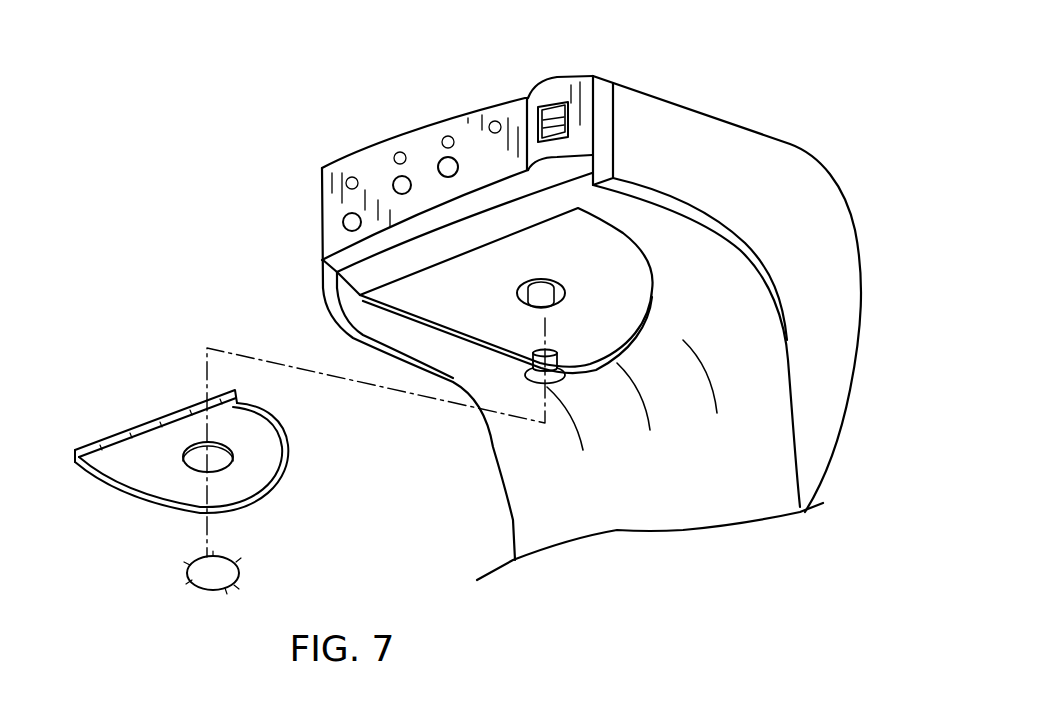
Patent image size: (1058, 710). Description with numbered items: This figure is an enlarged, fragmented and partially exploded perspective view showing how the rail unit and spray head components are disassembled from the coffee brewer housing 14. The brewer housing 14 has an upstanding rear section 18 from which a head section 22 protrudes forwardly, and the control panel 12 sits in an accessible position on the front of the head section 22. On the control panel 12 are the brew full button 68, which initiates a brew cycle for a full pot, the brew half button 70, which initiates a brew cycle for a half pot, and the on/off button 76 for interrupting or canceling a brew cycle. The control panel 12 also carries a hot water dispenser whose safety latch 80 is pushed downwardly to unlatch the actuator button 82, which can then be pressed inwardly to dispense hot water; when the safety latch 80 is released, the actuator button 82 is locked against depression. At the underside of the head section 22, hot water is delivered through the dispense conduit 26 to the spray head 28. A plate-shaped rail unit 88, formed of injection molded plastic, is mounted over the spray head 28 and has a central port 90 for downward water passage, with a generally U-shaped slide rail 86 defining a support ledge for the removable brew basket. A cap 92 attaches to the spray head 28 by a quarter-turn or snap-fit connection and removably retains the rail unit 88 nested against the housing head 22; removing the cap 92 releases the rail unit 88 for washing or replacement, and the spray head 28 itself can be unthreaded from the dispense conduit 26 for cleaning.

The control panel 12 is at (372, 145).
The brewer housing 14 is at (843, 226).
The rear section 18 is at (770, 483).
The head section 22 is at (725, 118).
The dispense conduit 26 is at (555, 283).
The spray head 28 is at (557, 377).
The brew full button 68 is at (394, 181).
The brew half button 70 is at (444, 158).
The on/off button 76 is at (343, 224).
The safety latch 80 is at (568, 133).
The actuator button 82 is at (553, 102).
The slide rail 86 is at (130, 493).
The rail unit 88 is at (130, 440).
The central port 90 is at (227, 463).
The cap 92 is at (192, 580).